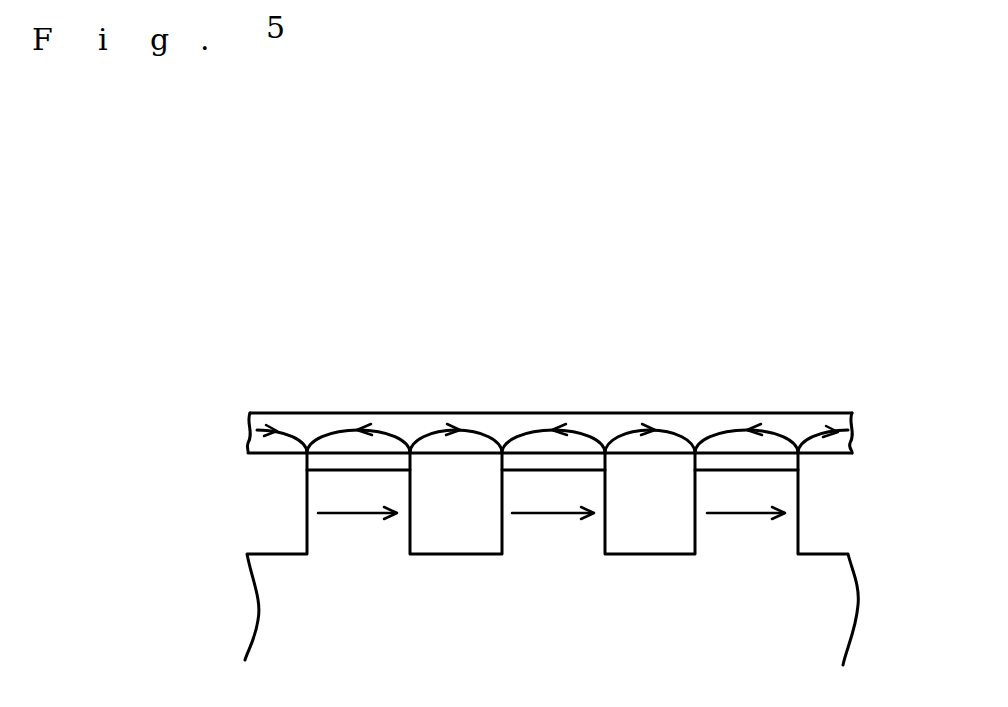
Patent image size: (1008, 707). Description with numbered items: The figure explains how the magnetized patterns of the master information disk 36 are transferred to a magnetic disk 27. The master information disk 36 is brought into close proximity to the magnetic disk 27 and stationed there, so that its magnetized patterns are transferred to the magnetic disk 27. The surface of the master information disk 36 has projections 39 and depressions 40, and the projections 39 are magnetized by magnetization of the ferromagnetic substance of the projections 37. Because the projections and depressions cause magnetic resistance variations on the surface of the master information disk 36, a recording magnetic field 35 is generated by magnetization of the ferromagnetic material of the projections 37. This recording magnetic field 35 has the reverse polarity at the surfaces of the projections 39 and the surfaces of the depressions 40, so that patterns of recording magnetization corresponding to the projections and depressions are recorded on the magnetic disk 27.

The magnetic disk 27 is at (648, 413).
The recording magnetic field 35 is at (428, 432).
The master information disk 36 is at (800, 487).
The projections 37 is at (352, 515).
The projections 39 is at (330, 492).
The depressions 40 is at (672, 535).